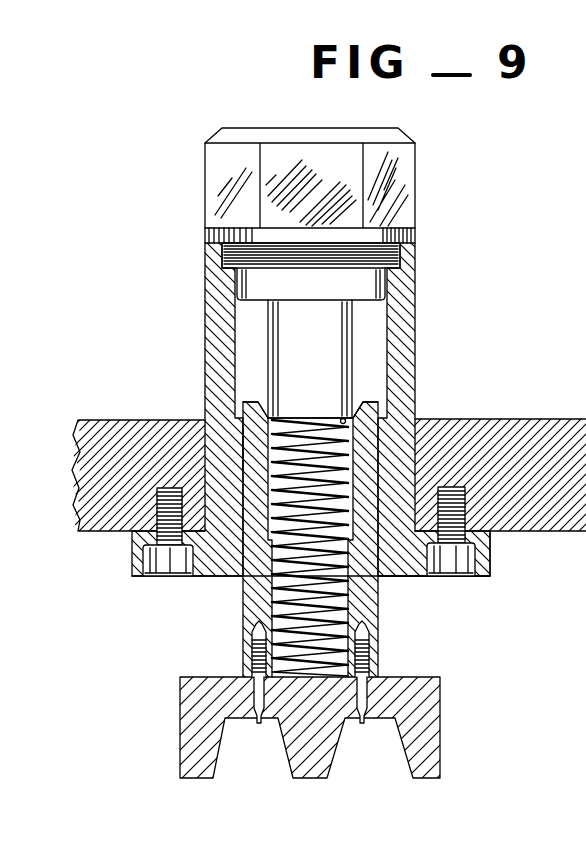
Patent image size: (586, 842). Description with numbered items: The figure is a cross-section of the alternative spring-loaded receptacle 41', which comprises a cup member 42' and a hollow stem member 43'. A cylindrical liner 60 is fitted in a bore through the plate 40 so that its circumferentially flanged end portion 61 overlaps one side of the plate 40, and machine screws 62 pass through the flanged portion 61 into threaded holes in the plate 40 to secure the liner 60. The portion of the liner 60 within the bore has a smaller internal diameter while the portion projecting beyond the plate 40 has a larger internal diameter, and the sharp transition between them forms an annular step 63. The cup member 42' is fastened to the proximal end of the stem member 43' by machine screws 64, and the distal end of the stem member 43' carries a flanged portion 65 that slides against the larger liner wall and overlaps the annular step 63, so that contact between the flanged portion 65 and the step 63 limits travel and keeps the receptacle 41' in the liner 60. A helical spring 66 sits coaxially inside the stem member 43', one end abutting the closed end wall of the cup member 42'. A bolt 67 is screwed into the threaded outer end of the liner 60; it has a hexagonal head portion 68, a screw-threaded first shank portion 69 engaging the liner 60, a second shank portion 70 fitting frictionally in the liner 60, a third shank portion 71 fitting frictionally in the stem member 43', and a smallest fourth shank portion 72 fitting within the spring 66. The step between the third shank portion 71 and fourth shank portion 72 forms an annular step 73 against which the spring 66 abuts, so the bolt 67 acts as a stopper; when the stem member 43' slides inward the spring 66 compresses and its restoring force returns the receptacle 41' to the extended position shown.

The plate 40 is at (84, 420).
The receptacle 41' is at (272, 631).
The cup member 42' is at (347, 727).
The stem member 43' is at (358, 539).
The cylindrical liner 60 is at (416, 372).
The circumferentially flanged end portion 61 is at (485, 575).
The machine screws 62 is at (177, 578).
The annular step 63 is at (270, 400).
The machine screws 64 is at (250, 720).
The flanged portion 65 is at (243, 403).
The helical spring 66 is at (273, 602).
The bolt 67 is at (440, 170).
The head portion 68 is at (222, 162).
The first shank portion 69 is at (412, 258).
The second shank portion 70 is at (267, 276).
The third shank portion 71 is at (275, 310).
The fourth shank portion 72 is at (360, 414).
The annular step 73 is at (240, 448).